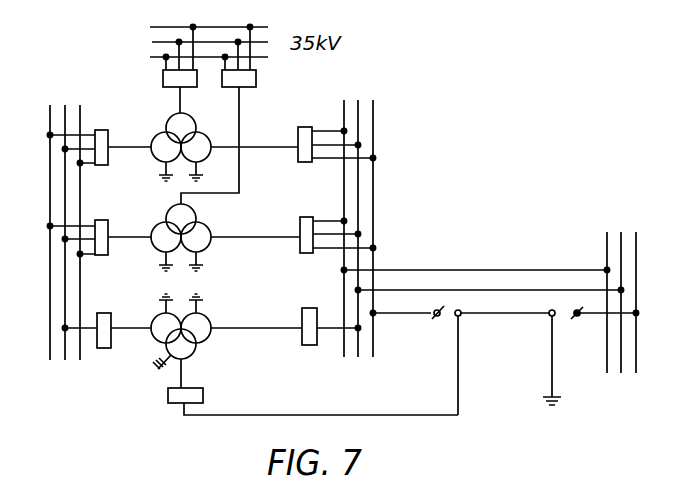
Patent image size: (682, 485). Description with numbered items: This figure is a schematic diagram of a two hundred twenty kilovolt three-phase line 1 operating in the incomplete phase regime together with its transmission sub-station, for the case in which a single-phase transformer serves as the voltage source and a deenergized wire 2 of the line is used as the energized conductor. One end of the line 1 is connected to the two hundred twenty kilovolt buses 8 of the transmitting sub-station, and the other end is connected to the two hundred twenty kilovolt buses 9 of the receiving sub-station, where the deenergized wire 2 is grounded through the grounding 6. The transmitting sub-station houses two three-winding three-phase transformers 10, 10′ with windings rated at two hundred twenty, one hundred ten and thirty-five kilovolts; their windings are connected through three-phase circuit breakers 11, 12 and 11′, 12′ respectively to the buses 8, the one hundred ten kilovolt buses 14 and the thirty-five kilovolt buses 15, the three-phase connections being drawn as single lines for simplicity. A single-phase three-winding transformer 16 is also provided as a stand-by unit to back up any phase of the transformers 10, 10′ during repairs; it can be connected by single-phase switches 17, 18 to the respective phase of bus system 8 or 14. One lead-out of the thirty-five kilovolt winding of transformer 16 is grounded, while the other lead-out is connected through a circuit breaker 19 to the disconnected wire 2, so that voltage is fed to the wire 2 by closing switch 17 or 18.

The line 1 is at (489, 290).
The deenergized wire 2 is at (493, 313).
The grounding 6 is at (602, 328).
The buses 8 is at (373, 121).
The buses 9 is at (607, 373).
The three-winding three-phase transformer 10 is at (212, 115).
The three-winding three-phase transformer 10′ is at (203, 224).
The three-phase circuit breaker 11 is at (298, 132).
The three-phase circuit breaker 11′ is at (300, 222).
The three-phase circuit breaker 12 is at (104, 142).
The three-phase circuit breaker 12′ is at (104, 232).
The buses 14 is at (80, 120).
The buses 15 is at (150, 57).
The single-phase three-winding transformer 16 is at (200, 350).
The single-phase switch 17 is at (310, 345).
The single-phase switch 18 is at (107, 335).
The circuit breaker 19 is at (203, 396).